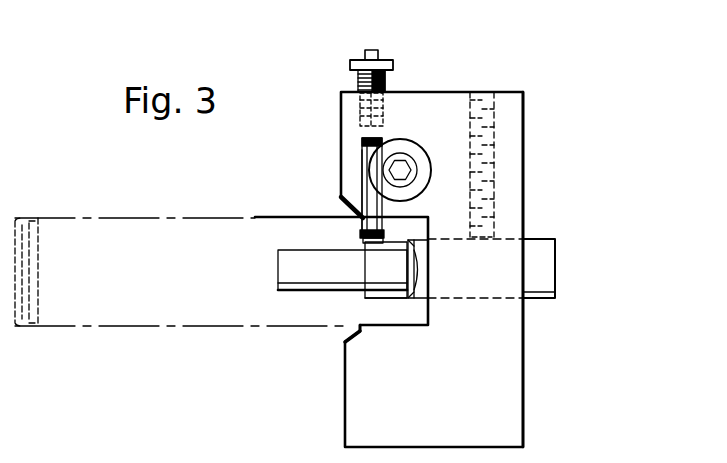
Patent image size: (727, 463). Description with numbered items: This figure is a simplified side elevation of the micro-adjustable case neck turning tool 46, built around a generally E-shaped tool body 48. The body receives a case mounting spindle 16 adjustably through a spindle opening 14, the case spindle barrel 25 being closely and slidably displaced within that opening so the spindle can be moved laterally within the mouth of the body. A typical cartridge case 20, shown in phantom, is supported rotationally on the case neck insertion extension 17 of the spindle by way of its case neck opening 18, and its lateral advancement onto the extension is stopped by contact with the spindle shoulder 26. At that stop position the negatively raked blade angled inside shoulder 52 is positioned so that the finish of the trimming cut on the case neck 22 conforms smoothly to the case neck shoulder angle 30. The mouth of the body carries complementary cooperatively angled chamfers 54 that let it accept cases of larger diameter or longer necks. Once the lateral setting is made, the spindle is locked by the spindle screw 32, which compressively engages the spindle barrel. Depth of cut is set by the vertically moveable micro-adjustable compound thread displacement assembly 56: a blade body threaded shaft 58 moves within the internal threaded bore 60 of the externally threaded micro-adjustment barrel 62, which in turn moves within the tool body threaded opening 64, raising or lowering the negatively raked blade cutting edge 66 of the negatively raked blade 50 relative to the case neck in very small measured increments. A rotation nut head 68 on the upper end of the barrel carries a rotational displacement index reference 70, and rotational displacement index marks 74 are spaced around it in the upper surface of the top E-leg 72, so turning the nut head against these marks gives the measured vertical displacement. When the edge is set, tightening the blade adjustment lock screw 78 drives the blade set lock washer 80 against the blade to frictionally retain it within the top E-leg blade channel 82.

The spindle opening 14 is at (512, 237).
The case mounting spindle 16 is at (542, 246).
The case neck insertion extension 17 is at (278, 250).
The case neck opening 18 is at (415, 258).
The cartridge case 20 is at (110, 218).
The case neck 22 is at (388, 298).
The case spindle barrel 25 is at (542, 295).
The spindle shoulder 26 is at (412, 283).
The case neck shoulder angle 30 is at (365, 300).
The spindle screw 32 is at (493, 220).
The micro-adjustable case neck turning tool 46 is at (518, 64).
The E-shaped tool body 48 is at (520, 386).
The negatively raked blade 50 is at (363, 222).
The negatively raked blade angled inside shoulder 52 is at (363, 239).
The angled chamfers 54 is at (343, 198).
The micro-adjustable compound thread displacement assembly 56 is at (340, 107).
The blade body threaded shaft 58 is at (367, 140).
The internal threaded bore 60 is at (382, 112).
The micro-adjustment barrel 62 is at (350, 66).
The tool body threaded opening 64 is at (397, 92).
The negatively raked blade cutting edge 66 is at (365, 245).
The rotation nut head 68 is at (353, 60).
The rotational displacement index reference 70 is at (390, 60).
The top E-leg 72 is at (512, 90).
The rotational displacement index marks 74 is at (350, 88).
The blade adjustment lock screw 78 is at (407, 157).
The blade set lock washer 80 is at (418, 192).
The top E-leg blade channel 82 is at (362, 157).